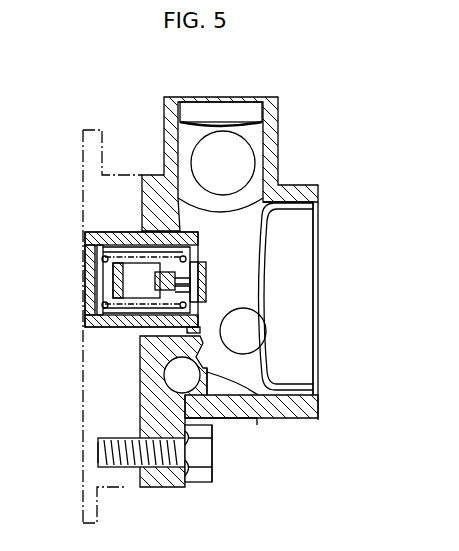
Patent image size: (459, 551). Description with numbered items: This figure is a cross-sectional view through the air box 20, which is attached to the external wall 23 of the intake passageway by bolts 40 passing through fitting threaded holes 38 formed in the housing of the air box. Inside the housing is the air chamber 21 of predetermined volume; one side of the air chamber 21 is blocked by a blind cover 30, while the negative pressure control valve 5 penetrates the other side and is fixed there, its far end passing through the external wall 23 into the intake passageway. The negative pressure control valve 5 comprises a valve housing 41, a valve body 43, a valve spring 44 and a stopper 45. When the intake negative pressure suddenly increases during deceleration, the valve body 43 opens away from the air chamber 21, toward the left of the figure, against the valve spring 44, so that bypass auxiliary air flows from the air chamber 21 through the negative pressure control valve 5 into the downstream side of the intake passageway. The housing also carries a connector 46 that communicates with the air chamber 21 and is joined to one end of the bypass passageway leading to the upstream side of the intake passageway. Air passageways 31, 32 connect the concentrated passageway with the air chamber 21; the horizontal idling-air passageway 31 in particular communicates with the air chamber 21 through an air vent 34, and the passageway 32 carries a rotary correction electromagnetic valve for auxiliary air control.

The negative pressure control valve 5 is at (153, 222).
The air box 20 is at (294, 173).
The air chamber 21 is at (221, 273).
The external wall 23 is at (93, 412).
The blind cover 30 is at (265, 268).
The air passageway 31 is at (208, 418).
The air passageway 32 is at (328, 311).
The air vent 34 is at (192, 385).
The fitting threaded hole 38 is at (125, 467).
The bolt 40 is at (203, 462).
The valve housing 41 is at (152, 332).
The valve body 43 is at (207, 287).
The valve spring 44 is at (132, 255).
The stopper 45 is at (140, 268).
The connector 46 is at (232, 140).